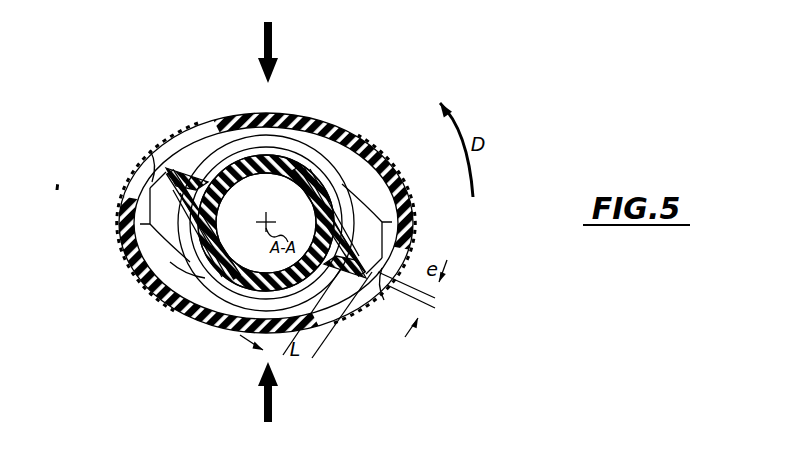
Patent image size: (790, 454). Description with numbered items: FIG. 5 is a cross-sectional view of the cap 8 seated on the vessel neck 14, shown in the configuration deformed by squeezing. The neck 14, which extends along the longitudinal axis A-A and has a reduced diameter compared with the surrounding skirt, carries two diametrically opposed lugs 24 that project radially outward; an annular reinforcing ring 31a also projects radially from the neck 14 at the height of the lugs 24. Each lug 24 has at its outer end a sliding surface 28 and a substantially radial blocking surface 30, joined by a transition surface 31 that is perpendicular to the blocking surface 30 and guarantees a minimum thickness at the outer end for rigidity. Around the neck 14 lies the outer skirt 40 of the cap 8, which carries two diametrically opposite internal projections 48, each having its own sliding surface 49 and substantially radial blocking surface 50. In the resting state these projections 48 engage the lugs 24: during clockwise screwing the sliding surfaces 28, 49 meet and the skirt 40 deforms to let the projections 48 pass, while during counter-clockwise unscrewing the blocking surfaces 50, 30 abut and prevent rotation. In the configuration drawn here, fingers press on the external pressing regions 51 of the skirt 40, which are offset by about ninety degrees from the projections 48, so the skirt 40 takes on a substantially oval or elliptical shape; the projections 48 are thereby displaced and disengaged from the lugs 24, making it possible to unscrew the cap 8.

The cap 8 is at (347, 92).
The neck 14 is at (300, 162).
The lugs 24 is at (250, 292).
The sliding surface 28 is at (142, 266).
The blocking surface 30 is at (182, 168).
The transition surface 31 is at (170, 163).
The annular reinforcing ring 31a is at (200, 275).
The outer skirt 40 is at (290, 110).
The internal projections 48 is at (122, 207).
The sliding surface 49 is at (166, 170).
The blocking surface 50 is at (126, 241).
The external pressing regions 51 is at (243, 110).